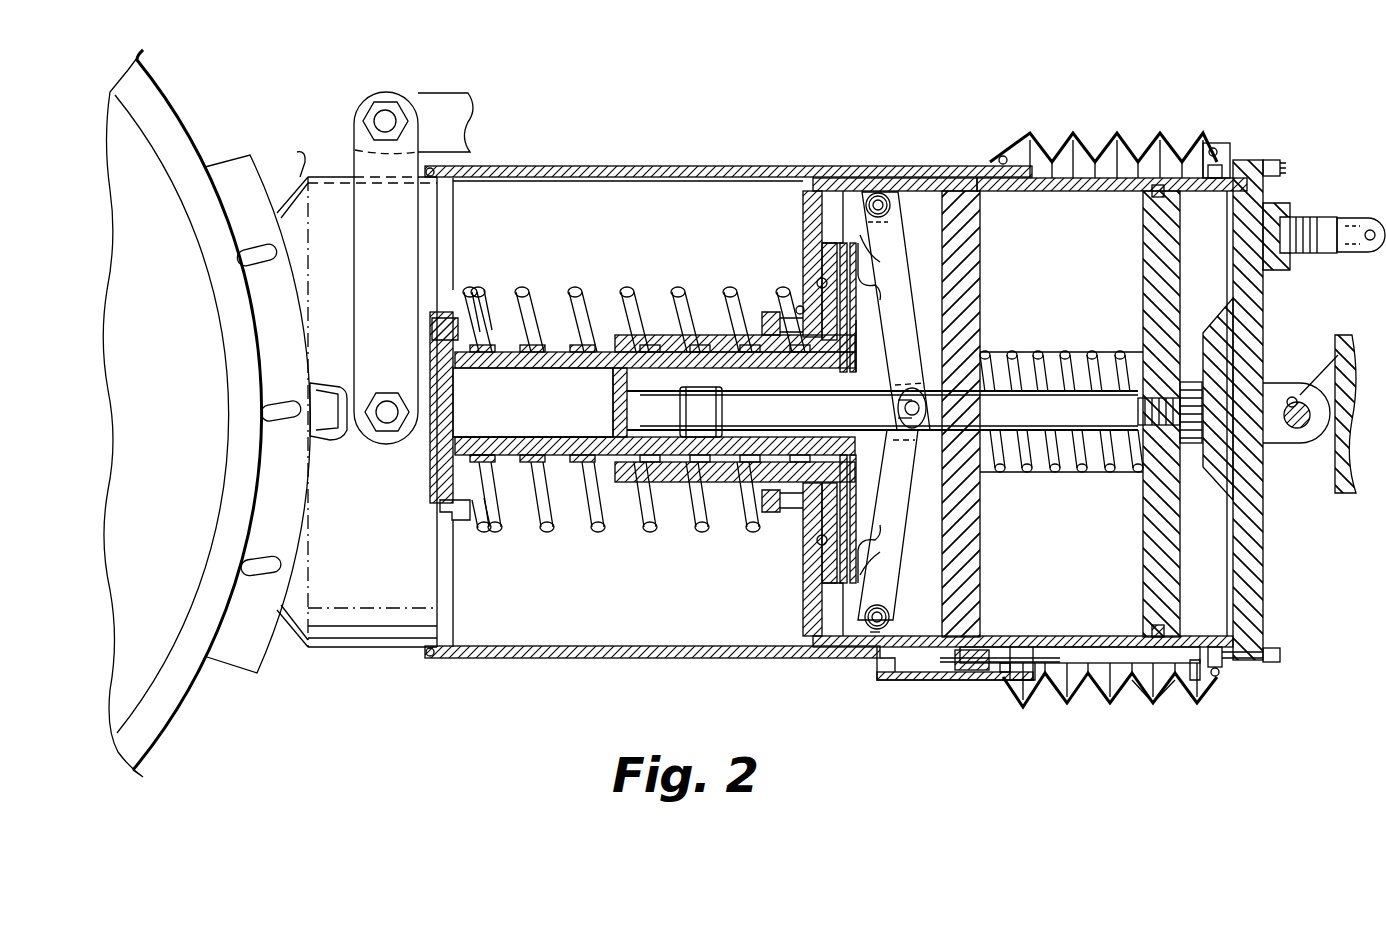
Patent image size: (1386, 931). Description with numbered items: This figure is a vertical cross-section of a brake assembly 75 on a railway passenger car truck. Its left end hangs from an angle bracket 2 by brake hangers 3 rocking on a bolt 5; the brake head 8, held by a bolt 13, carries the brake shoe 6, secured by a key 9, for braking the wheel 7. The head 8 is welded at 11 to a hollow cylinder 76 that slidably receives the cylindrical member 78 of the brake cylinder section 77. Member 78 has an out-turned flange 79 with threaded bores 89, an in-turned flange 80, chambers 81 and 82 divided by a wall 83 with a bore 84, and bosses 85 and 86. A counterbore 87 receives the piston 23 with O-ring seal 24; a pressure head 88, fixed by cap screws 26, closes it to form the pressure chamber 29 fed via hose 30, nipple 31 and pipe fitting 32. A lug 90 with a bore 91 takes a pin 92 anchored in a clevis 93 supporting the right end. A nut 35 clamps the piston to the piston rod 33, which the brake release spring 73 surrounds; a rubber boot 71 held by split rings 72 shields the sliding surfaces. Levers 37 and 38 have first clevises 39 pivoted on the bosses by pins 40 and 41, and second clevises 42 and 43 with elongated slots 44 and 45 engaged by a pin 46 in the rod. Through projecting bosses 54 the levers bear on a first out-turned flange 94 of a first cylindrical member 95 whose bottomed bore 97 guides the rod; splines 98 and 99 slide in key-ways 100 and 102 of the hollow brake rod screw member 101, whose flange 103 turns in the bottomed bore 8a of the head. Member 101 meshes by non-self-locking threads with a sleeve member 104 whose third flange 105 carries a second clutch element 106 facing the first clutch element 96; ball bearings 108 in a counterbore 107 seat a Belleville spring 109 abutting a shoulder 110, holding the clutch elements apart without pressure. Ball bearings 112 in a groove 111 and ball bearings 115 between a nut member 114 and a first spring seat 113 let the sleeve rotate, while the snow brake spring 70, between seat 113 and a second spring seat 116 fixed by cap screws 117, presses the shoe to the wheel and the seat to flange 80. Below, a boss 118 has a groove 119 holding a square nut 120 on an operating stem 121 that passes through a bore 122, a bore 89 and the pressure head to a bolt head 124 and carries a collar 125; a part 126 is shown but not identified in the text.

The angle bracket 2 is at (440, 100).
The brake hangers 3 is at (362, 163).
The bolt 5 is at (366, 112).
The brake shoe 6 is at (250, 640).
The wheel 7 is at (172, 690).
The brake head 8 is at (368, 640).
The bottomed bore 8a is at (432, 337).
The key 9 is at (296, 156).
The welding 11 is at (425, 652).
The bolt 13 is at (386, 430).
The piston 23 is at (1170, 571).
The O-ring seal 24 is at (1162, 628).
The cap screws 26 is at (1283, 165).
The pressure chamber 29 is at (1230, 538).
The hose 30 is at (1365, 218).
The nipple 31 is at (1328, 254).
The pipe fitting 32 is at (1275, 262).
The piston rod 33 is at (1060, 398).
The nut 35 is at (1190, 384).
The lever 37 is at (895, 276).
The lever 38 is at (895, 552).
The first clevis 39 is at (892, 222).
The pin 40 is at (878, 193).
The pin 41 is at (876, 632).
The second clevis 42 is at (920, 383).
The second clevis 43 is at (901, 457).
The elongated slot 44 is at (886, 403).
The elongated slot 45 is at (886, 421).
The pin 46 is at (920, 408).
The projecting bosses 54 is at (880, 270).
The snow brake spring 70 is at (592, 532).
The rubber boot 71 is at (1025, 700).
The split metallic ring 72 is at (1003, 156).
The brake release spring 73 is at (1075, 470).
The brake assembly 75 is at (758, 153).
The hollow cylinder 76 is at (625, 166).
The brake cylinder section 77 is at (1118, 140).
The cylindrical member 78 is at (1056, 186).
The out-turned flange 79 is at (1206, 143).
The in-turned flange 80 is at (835, 190).
The chamber 81 is at (915, 632).
The chamber 82 is at (1133, 690).
The wall 83 is at (968, 577).
The bore 84 is at (966, 432).
The boss 85 is at (887, 205).
The boss 86 is at (866, 617).
The counterbore 87 is at (1193, 682).
The pressure head 88 is at (1256, 572).
The screw-threaded bores 89 is at (1212, 180).
The lug 90 is at (1290, 432).
The bore 91 is at (1291, 397).
The pin 92 is at (1312, 415).
The clevis 93 is at (1328, 358).
The first out-turned flange 94 is at (805, 580).
The first cylindrical member 95 is at (616, 412).
The first annular clutch element 96 is at (858, 268).
The bottomed bore 97 is at (782, 401).
The spline 98 is at (616, 362).
The spline 99 is at (616, 446).
The key-way 100 is at (540, 368).
The hollow brake rod screw member 101 is at (543, 462).
The second key-way 102 is at (543, 452).
The second out-turned flange 103 is at (437, 465).
The sleeve member 104 is at (670, 338).
The third out-turned flange 105 is at (824, 245).
The second annular clutch element 106 is at (824, 557).
The counterbore 107 is at (846, 347).
The first set of ball bearings 108 is at (815, 510).
The Belleville spring 109 is at (855, 357).
The shoulder 110 is at (843, 452).
The annular groove 111 is at (855, 292).
The second set of ball bearings 112 is at (818, 281).
The first annular spring seat 113 is at (805, 211).
The nut member 114 is at (770, 312).
The third set of ball bearings 115 is at (800, 306).
The second annular spring seat 116 is at (450, 517).
The cap screws 117 is at (470, 300).
The boss 118 is at (975, 664).
The groove 119 is at (897, 668).
The square nut 120 is at (962, 672).
The operating stem 121 is at (1090, 660).
The bore 122 is at (1028, 655).
The bolt head 124 is at (1280, 655).
The collar 125 is at (1217, 678).
The bracket 126 is at (1000, 652).